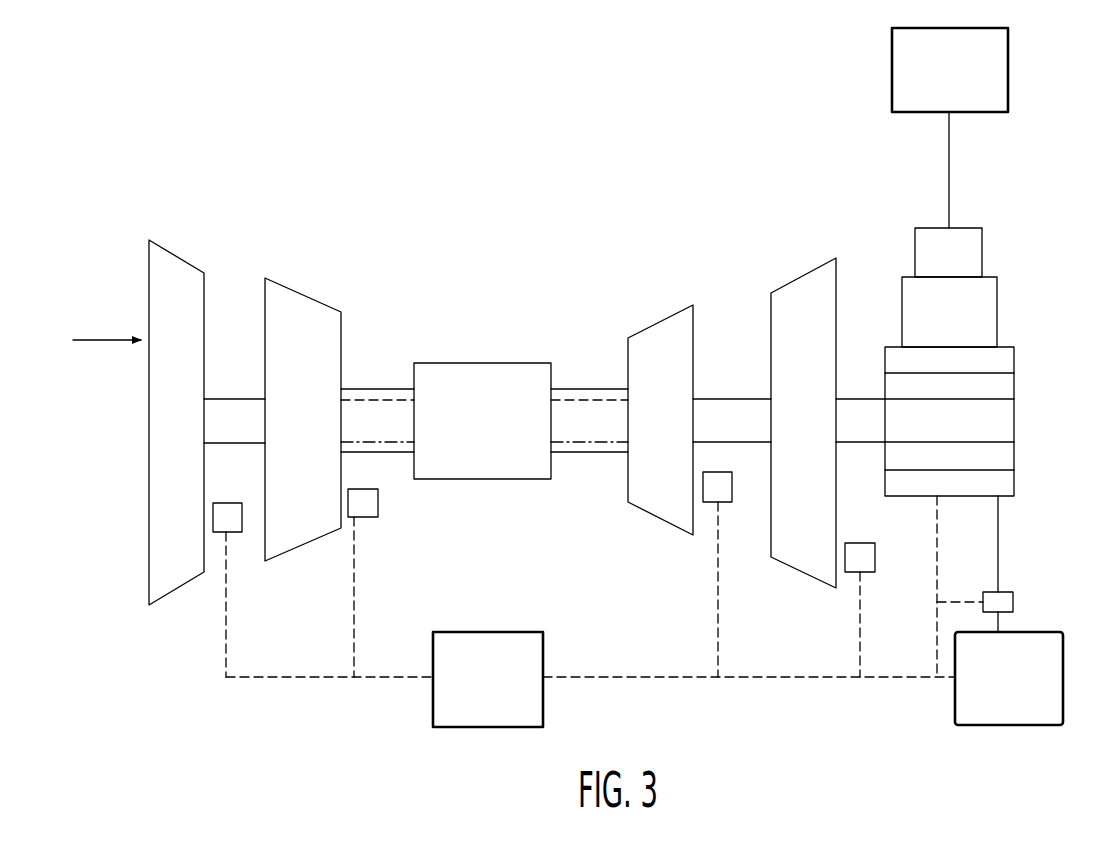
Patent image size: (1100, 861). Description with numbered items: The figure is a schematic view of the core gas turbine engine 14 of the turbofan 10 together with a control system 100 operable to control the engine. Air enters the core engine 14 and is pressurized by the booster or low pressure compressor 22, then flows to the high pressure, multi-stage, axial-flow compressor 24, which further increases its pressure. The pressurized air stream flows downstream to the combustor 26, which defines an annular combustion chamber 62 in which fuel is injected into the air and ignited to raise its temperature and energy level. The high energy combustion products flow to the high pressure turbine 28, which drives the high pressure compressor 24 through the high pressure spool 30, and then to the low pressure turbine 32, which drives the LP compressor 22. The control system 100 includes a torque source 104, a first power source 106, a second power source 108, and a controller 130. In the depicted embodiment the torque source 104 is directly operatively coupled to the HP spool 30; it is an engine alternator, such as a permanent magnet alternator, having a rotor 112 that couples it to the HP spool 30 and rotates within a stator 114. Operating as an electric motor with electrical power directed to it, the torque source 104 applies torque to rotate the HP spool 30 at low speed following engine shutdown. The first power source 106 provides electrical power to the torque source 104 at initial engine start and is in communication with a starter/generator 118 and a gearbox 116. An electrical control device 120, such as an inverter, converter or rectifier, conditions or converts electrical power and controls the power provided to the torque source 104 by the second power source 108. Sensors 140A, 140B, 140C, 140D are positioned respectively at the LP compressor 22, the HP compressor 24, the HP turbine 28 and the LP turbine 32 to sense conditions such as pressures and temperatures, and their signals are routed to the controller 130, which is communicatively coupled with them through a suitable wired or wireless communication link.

The turbofan 10 is at (402, 234).
The core gas turbine engine 14 is at (668, 243).
The low pressure compressor 22 is at (189, 435).
The high pressure compressor 24 is at (315, 435).
The combustor 26 is at (427, 363).
The high pressure turbine 28 is at (670, 433).
The high pressure spool 30 is at (600, 389).
The low pressure turbine 32 is at (814, 433).
The combustion chamber 62 is at (500, 372).
The control system 100 is at (806, 701).
The torque source 104 is at (984, 406).
The first power source 106 is at (966, 81).
The second power source 108 is at (1027, 693).
The rotor 112 is at (1014, 385).
The stator 114 is at (1014, 359).
The gearbox 116 is at (966, 323).
The starter/generator 118 is at (966, 266).
The electrical control device 120 is at (1013, 601).
The controller 130 is at (506, 693).
The sensor 140A is at (233, 533).
The sensor 140B is at (365, 518).
The sensor 140C is at (725, 503).
The sensor 140D is at (863, 573).